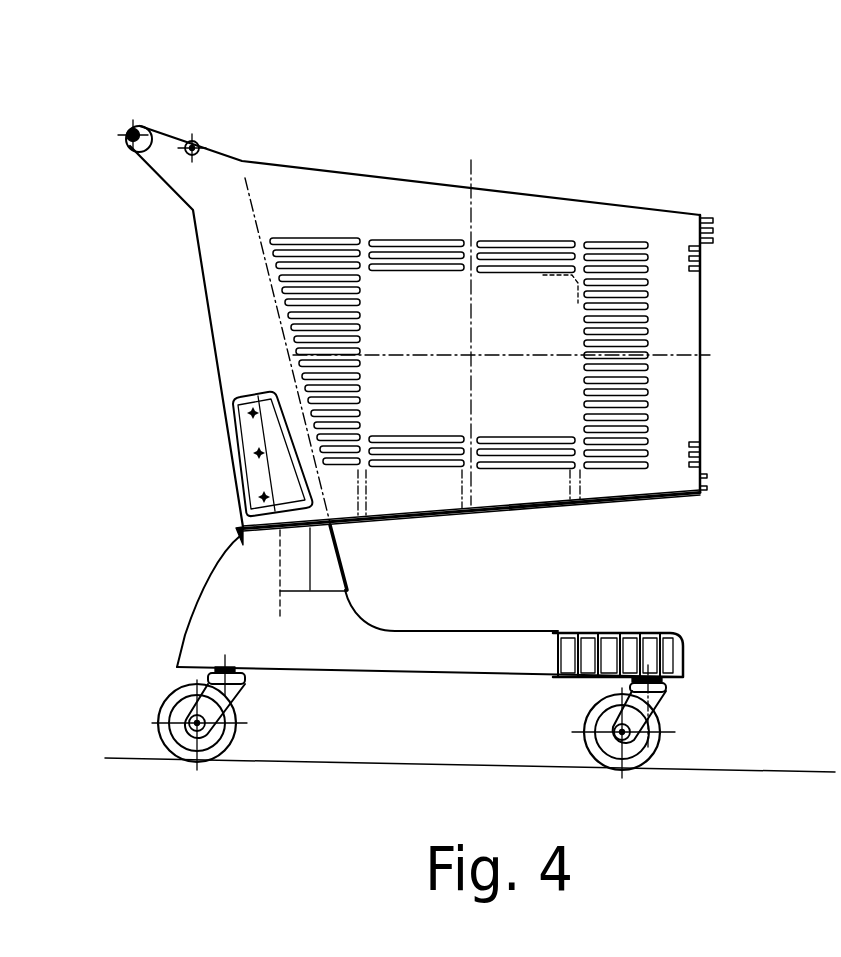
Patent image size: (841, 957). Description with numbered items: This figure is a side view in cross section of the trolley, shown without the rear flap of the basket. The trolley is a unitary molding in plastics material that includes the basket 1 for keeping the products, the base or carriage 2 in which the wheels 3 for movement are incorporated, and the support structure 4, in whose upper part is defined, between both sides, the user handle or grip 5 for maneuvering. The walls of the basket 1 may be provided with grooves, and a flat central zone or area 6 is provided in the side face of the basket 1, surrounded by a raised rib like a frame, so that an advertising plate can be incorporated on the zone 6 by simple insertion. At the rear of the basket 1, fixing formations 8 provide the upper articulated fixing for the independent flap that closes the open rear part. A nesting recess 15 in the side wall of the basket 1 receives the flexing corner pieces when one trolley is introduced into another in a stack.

The basket 1 is at (626, 275).
The base or carriage 2 is at (682, 648).
The wheels 3 is at (175, 703).
The support structure 4 is at (222, 325).
The user handle or grip 5 is at (130, 130).
The flat central zones or areas 6 is at (497, 299).
The fixing formations 8 is at (195, 145).
The nesting recess 15 is at (284, 468).